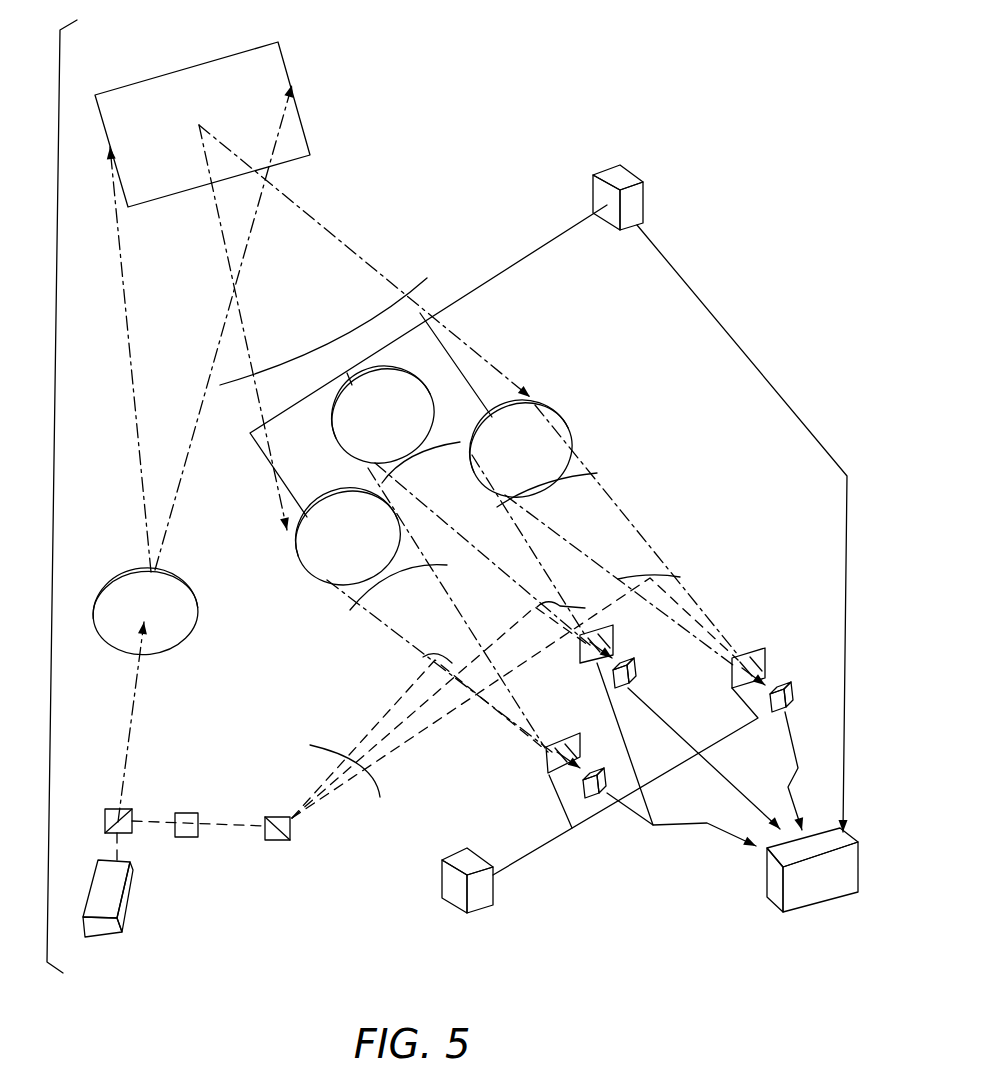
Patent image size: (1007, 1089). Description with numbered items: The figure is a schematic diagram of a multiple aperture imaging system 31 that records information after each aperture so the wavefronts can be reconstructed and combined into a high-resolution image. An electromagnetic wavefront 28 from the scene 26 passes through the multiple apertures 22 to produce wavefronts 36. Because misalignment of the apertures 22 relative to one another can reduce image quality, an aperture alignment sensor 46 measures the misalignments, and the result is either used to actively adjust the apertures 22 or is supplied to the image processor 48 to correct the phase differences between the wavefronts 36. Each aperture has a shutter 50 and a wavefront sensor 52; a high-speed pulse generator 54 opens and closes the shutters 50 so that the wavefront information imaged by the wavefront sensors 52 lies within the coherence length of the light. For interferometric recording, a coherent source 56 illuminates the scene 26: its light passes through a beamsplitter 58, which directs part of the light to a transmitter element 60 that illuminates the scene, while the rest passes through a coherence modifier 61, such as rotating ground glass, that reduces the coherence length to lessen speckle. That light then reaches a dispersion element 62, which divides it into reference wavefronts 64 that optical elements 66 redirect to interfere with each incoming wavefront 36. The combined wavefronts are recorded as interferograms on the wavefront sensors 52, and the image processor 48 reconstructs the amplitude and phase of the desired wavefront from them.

The apertures 22 is at (400, 371).
The scene 26 is at (162, 73).
The electromagnetic wavefront 28 is at (337, 340).
The multiple aperture imaging system 31 is at (54, 503).
The wavefronts 36 is at (382, 482).
The aperture alignment sensor 46 is at (647, 190).
The image processor 48 is at (767, 888).
The shutter 50 is at (546, 756).
The wavefront sensor 52 is at (635, 678).
The high-speed pulse generator 54 is at (477, 913).
The coherent source 56 is at (132, 903).
The beamsplitter 58 is at (115, 809).
The transmitter element 60 is at (135, 570).
The coherence modifier 61 is at (185, 813).
The dispersion element 62 is at (270, 842).
The reference wavefronts 64 is at (318, 747).
The optical elements 66 is at (427, 657).